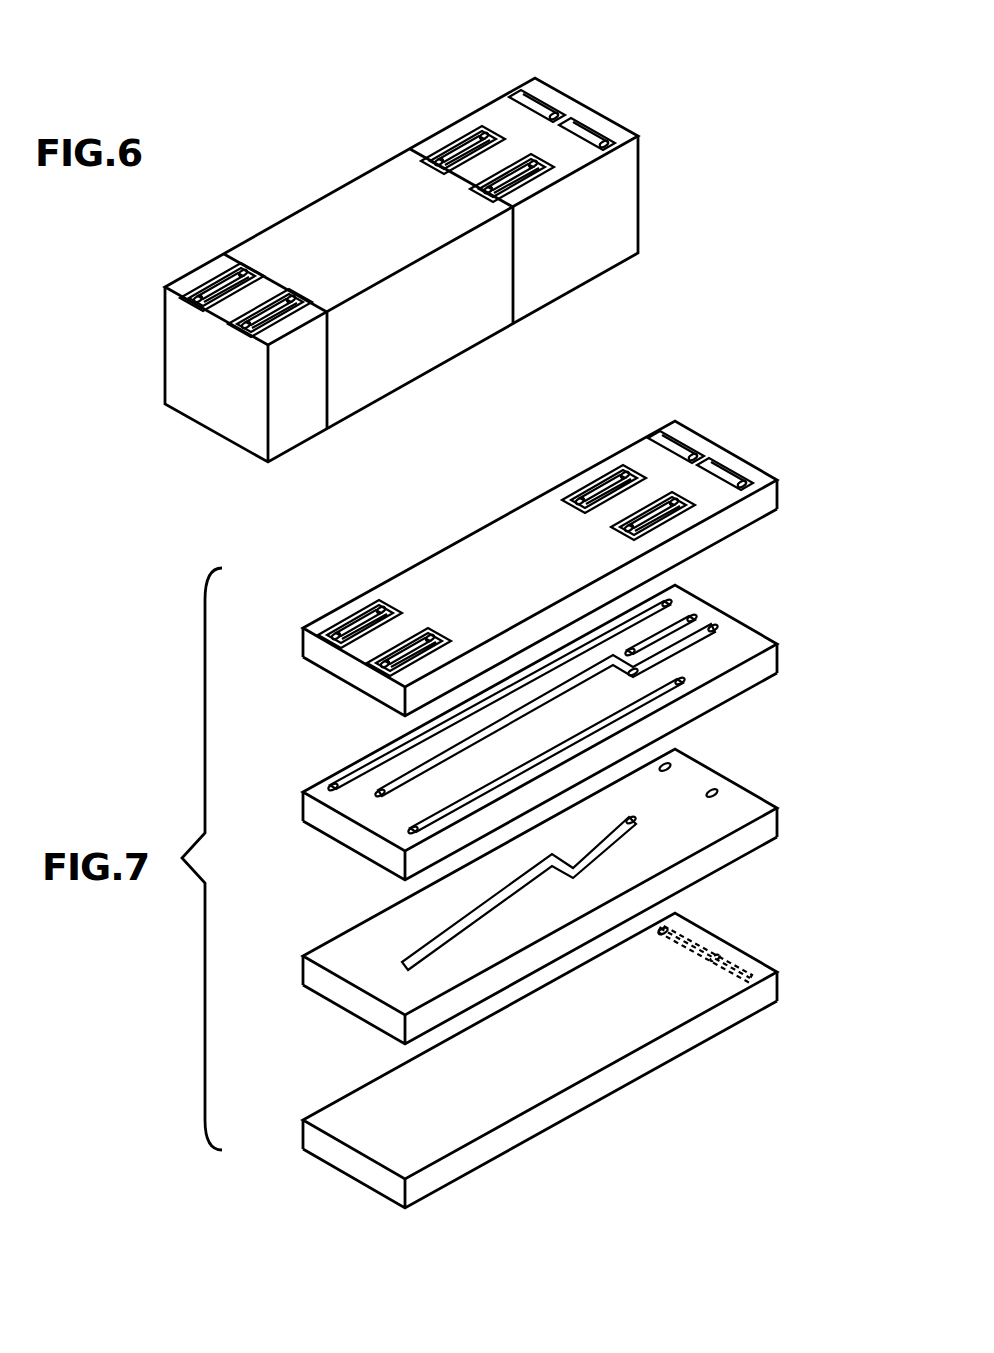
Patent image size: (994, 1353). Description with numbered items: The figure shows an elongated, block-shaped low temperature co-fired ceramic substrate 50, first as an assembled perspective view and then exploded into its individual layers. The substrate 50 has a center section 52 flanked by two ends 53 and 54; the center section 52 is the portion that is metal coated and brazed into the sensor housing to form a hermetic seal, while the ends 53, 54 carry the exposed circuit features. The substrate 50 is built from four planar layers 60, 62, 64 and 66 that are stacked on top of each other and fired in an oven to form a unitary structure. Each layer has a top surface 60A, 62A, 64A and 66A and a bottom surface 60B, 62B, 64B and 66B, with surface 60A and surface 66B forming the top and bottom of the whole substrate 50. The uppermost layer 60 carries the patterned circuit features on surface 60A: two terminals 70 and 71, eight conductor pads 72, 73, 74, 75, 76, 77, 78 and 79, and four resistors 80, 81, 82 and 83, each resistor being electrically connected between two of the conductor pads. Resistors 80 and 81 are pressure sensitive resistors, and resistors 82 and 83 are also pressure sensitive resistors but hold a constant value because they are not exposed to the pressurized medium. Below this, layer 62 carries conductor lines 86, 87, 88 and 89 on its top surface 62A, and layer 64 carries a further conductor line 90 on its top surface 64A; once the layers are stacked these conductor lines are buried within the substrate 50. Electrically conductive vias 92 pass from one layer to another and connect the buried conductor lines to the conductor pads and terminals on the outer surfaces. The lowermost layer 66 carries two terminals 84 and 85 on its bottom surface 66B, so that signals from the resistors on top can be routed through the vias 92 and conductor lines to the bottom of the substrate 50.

In FIG. 6, the substrate 50 is at (344, 175).
In FIG. 7, the substrate 50 is at (182, 858).
In FIG. 6, the center section 52 is at (280, 240).
In FIG. 6, the end 53 is at (235, 442).
In FIG. 6, the end 54 is at (641, 190).
In FIG. 6, the terminal 70 is at (530, 95).
In FIG. 6, the terminal 71 is at (580, 125).
In FIG. 6, the conductor pad 72 is at (188, 298).
In FIG. 6, the conductor pad 73 is at (222, 265).
In FIG. 6, the conductor pad 74 is at (240, 308).
In FIG. 6, the conductor pad 75 is at (293, 313).
In FIG. 6, the conductor pad 76 is at (455, 160).
In FIG. 6, the conductor pad 77 is at (478, 128).
In FIG. 6, the conductor pad 78 is at (497, 185).
In FIG. 6, the conductor pad 79 is at (510, 168).
In FIG. 6, the resistor 80 is at (202, 287).
In FIG. 6, the resistor 81 is at (293, 332).
In FIG. 6, the resistor 82 is at (450, 152).
In FIG. 6, the resistor 83 is at (537, 193).
In FIG. 7, the terminal 84 is at (668, 948).
In FIG. 7, the terminal 85 is at (725, 965).
In FIG. 7, the conductor line 86 is at (368, 770).
In FIG. 7, the conductor line 87 is at (400, 797).
In FIG. 7, the conductor line 88 is at (680, 685).
In FIG. 7, the conductor line 89 is at (678, 626).
In FIG. 7, the conductor line 90 is at (403, 965).
In FIG. 7, the via 92 is at (697, 457).
In FIG. 7, the layer 60 is at (577, 568).
In FIG. 7, the top surface 60A is at (750, 462).
In FIG. 7, the bottom surface 60B is at (763, 522).
In FIG. 7, the layer 62 is at (590, 721).
In FIG. 7, the top surface 62A is at (770, 642).
In FIG. 7, the bottom surface 62B is at (760, 690).
In FIG. 7, the layer 64 is at (576, 896).
In FIG. 7, the top surface 64A is at (760, 808).
In FIG. 7, the bottom surface 64B is at (762, 848).
In FIG. 7, the layer 66 is at (589, 1056).
In FIG. 7, the top surface 66A is at (765, 960).
In FIG. 7, the bottom surface 66B is at (765, 1010).